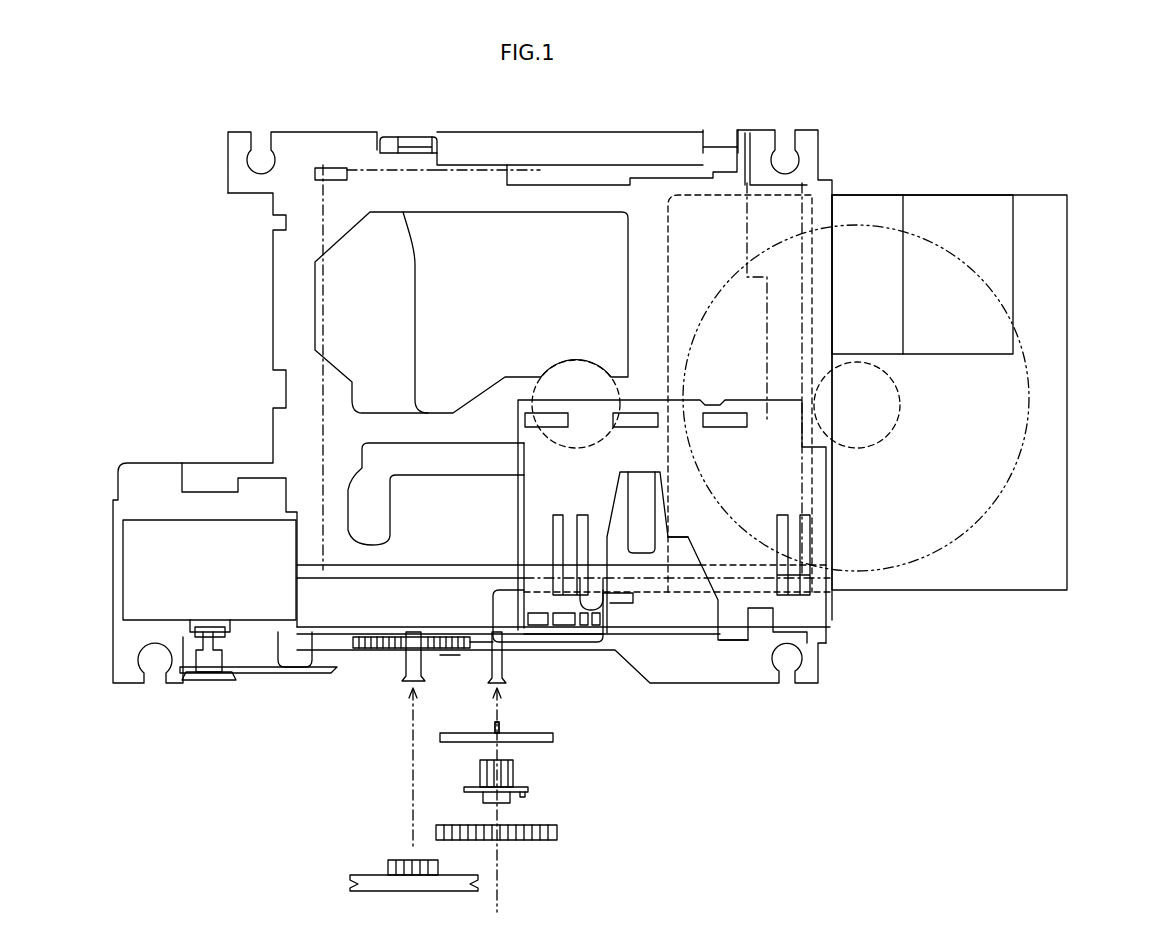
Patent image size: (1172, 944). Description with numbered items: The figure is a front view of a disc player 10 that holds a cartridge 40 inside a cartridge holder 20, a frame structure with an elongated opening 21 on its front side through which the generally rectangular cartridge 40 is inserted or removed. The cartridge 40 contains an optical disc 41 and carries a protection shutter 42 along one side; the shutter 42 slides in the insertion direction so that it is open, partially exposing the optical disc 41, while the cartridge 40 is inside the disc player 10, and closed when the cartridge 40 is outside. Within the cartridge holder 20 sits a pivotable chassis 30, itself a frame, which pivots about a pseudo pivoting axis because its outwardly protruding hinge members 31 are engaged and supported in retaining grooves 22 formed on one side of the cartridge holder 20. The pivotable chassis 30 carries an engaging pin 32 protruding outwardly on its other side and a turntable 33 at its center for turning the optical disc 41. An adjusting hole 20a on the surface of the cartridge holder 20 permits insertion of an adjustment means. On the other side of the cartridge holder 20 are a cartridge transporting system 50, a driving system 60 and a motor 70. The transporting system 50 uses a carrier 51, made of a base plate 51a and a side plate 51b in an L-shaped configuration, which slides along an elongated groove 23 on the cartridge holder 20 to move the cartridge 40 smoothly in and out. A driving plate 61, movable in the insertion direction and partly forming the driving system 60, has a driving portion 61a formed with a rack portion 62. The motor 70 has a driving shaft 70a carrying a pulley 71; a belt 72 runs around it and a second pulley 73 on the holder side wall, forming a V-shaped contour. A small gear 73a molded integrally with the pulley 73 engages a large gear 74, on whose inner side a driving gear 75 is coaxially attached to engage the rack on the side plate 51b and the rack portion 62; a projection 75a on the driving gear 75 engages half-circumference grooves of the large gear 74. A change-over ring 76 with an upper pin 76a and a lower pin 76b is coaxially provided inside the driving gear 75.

The disc player 10 is at (95, 166).
The cartridge holder 20 is at (287, 306).
The adjusting hole 20a is at (385, 490).
The elongated opening 21 is at (830, 521).
The retaining grooves 22 is at (400, 137).
The elongated groove 23 is at (652, 592).
The pivotable chassis 30 is at (318, 400).
The hinge members 31 is at (420, 143).
The engaging pin 32 is at (590, 612).
The turntable 33 is at (578, 360).
The cartridge 40 is at (1060, 232).
The optical disc 41 is at (1030, 375).
The protection shutter 42 is at (872, 210).
The cartridge transporting system 50 is at (714, 764).
The carrier 51 is at (800, 605).
The base plate 51a is at (755, 445).
The side plate 51b is at (730, 645).
The driving system 60 is at (372, 652).
The driving plate 61 is at (527, 650).
The driving portion 61a is at (395, 652).
The rack portion 62 is at (456, 650).
The motor 70 is at (140, 582).
The driving shaft 70a is at (200, 632).
The pulley 71 is at (210, 662).
The belt 72 is at (250, 674).
The pulley 73 is at (380, 876).
The small gear 73a is at (395, 860).
The large gear 74 is at (557, 833).
The driving gear 75 is at (520, 770).
The projection 75a is at (527, 793).
The change-over ring 76 is at (553, 738).
The upper pin 76a is at (500, 732).
The lower pin 76b is at (497, 727).